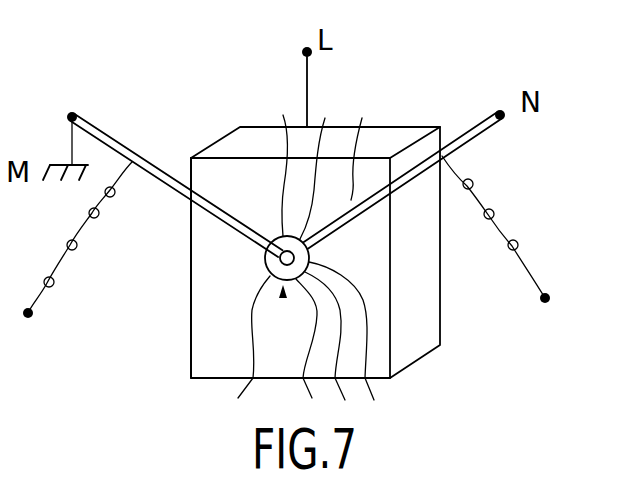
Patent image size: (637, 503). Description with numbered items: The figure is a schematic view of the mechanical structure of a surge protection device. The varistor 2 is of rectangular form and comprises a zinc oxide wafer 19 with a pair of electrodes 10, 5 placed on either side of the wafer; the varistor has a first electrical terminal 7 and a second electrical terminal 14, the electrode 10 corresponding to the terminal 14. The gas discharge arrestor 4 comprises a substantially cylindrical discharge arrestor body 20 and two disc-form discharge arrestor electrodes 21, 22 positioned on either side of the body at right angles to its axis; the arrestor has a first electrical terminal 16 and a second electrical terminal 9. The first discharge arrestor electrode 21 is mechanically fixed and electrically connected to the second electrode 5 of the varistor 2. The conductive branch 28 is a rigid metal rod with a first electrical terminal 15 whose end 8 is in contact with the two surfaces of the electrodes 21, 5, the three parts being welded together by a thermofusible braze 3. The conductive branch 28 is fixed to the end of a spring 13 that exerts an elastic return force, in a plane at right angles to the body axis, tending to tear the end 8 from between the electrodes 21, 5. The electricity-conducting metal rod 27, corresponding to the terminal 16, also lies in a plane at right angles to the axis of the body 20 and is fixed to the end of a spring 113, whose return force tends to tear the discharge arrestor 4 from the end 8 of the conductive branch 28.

The varistor 2 is at (430, 272).
The thermofusible braze 3 is at (283, 296).
The gas discharge arrestor 4 is at (312, 347).
The second electrode of the varistor 5 is at (217, 307).
The first electrical terminal of the varistor 7 is at (333, 343).
The second electrical terminal of the conductive branch 8 is at (366, 149).
The second electrical terminal of the discharge arrestor 9 is at (321, 168).
The electrode of the varistor 10 is at (431, 127).
The spring 13 is at (498, 215).
The second electrical terminal of the varistor 14 is at (302, 52).
The first electrical terminal of the conductive branch 15 is at (505, 124).
The first electrical terminal of the discharge arrestor 16 is at (71, 113).
The zinc oxide wafer 19 is at (413, 318).
The discharge arrestor body 20 is at (270, 167).
The first discharge arrestor electrode 21 is at (358, 338).
The second discharge arrestor electrode 22 is at (235, 345).
The metal rod 27 is at (113, 145).
The conductive branch 28 is at (476, 117).
The spring 113 is at (47, 257).